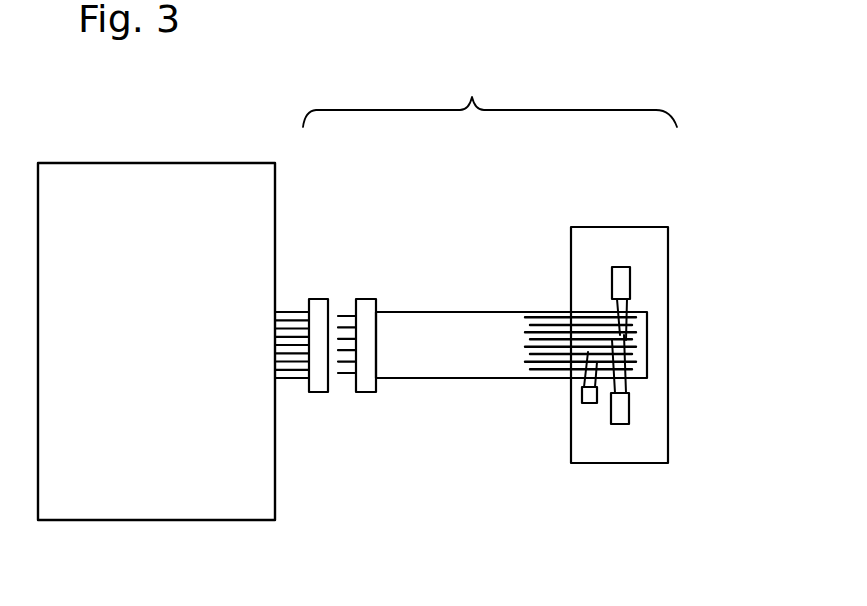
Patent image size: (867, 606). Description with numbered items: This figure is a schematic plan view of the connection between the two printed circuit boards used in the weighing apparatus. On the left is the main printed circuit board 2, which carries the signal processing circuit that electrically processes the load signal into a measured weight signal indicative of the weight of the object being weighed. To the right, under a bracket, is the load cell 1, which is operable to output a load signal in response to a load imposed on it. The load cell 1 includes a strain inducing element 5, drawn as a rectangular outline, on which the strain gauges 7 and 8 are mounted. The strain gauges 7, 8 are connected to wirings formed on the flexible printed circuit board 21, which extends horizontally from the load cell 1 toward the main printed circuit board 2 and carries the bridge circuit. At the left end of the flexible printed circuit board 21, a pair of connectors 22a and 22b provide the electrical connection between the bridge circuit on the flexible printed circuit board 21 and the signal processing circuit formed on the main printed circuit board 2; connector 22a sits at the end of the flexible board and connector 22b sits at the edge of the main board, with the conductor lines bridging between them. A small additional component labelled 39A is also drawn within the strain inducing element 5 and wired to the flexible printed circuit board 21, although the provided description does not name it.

The load cell 1 is at (472, 96).
The main printed circuit board 2 is at (193, 177).
The strain inducing element 5 is at (606, 240).
The strain gauge 7 is at (623, 280).
The strain gauge 8 is at (623, 408).
The flexible printed circuit board 21 is at (466, 368).
The connector 22a is at (367, 303).
The connector 22b is at (320, 307).
The thermistor / temperature sensing element 39A is at (580, 402).